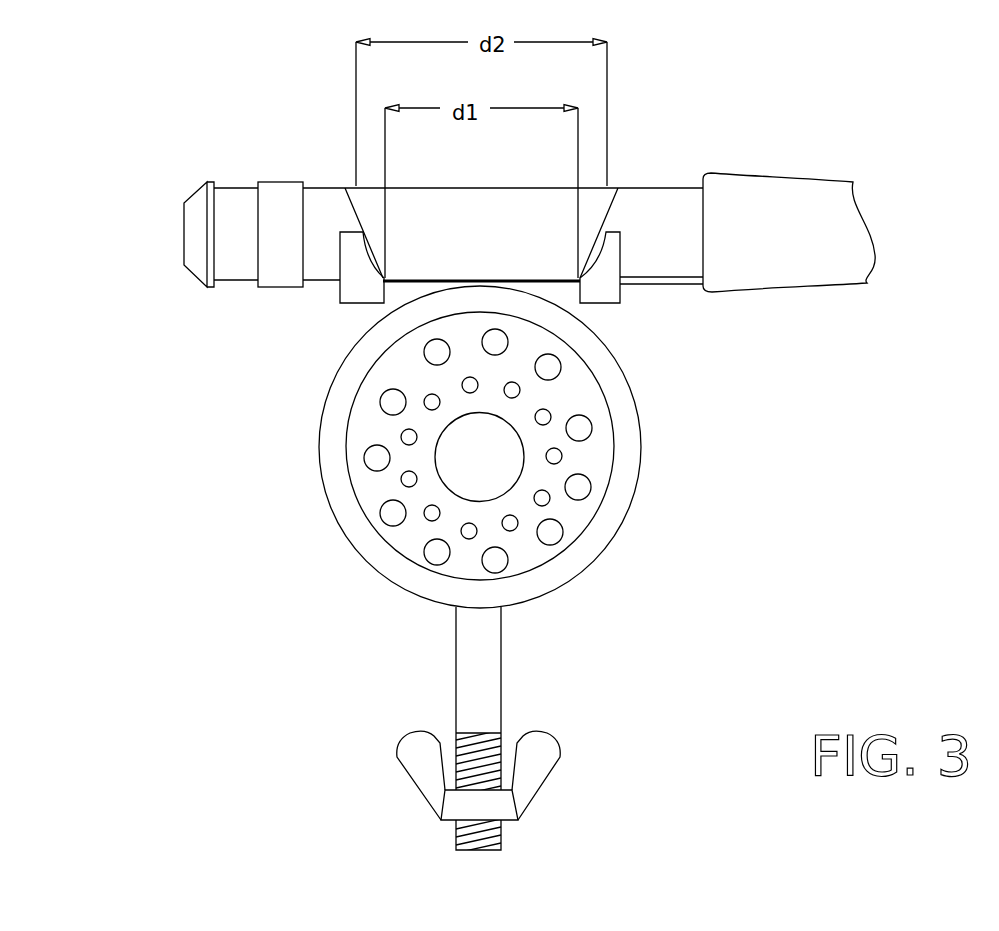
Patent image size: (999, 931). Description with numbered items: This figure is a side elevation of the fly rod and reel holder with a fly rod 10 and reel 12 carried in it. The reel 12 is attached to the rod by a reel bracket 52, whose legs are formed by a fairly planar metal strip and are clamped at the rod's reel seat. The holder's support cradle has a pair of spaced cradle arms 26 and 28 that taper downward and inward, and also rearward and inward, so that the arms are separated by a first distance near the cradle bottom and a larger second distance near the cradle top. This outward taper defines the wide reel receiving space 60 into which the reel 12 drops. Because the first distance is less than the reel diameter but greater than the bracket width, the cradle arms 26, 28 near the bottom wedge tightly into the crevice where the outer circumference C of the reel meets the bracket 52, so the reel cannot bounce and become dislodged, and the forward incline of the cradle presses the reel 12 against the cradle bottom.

The fly rod 10 is at (797, 232).
The reel receiving space 60 is at (497, 247).
The cradle arm 28 is at (342, 225).
The cradle arm 26 is at (620, 303).
The reel bracket 52 is at (376, 340).
The reel 12 is at (618, 530).
The outer circumference of the reel C is at (570, 447).